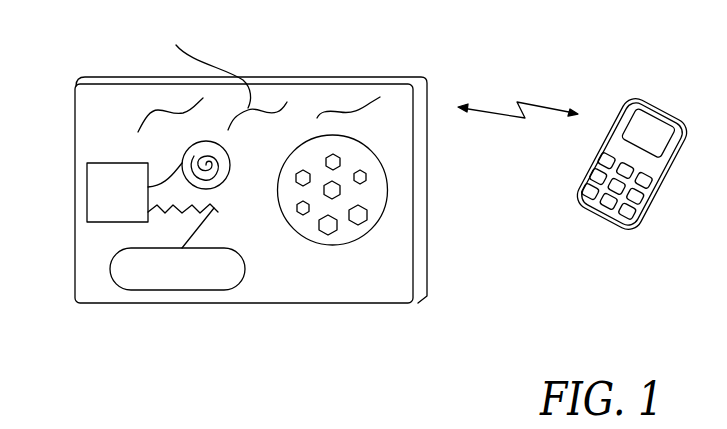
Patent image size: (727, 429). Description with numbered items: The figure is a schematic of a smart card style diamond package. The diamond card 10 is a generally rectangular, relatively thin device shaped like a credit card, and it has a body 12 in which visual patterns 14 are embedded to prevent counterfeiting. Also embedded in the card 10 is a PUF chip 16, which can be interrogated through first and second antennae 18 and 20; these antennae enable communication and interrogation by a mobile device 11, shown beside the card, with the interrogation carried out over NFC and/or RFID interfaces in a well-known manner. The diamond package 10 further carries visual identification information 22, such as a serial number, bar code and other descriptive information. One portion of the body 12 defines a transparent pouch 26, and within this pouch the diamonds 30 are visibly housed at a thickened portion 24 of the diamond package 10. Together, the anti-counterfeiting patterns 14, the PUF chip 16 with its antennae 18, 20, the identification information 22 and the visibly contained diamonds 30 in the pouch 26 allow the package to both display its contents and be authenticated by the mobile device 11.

The diamond card 10 is at (85, 323).
The mobile device 11 is at (677, 98).
The body 12 is at (97, 77).
The visual patterns 14 is at (175, 113).
The PUF chip 16 is at (87, 207).
The first antenna 18 is at (230, 167).
The second antenna 20 is at (213, 205).
The visual identification information 22 is at (203, 292).
The thickened portion 24 is at (353, 137).
The transparent pouch 26 is at (387, 198).
The diamonds 30 is at (340, 159).